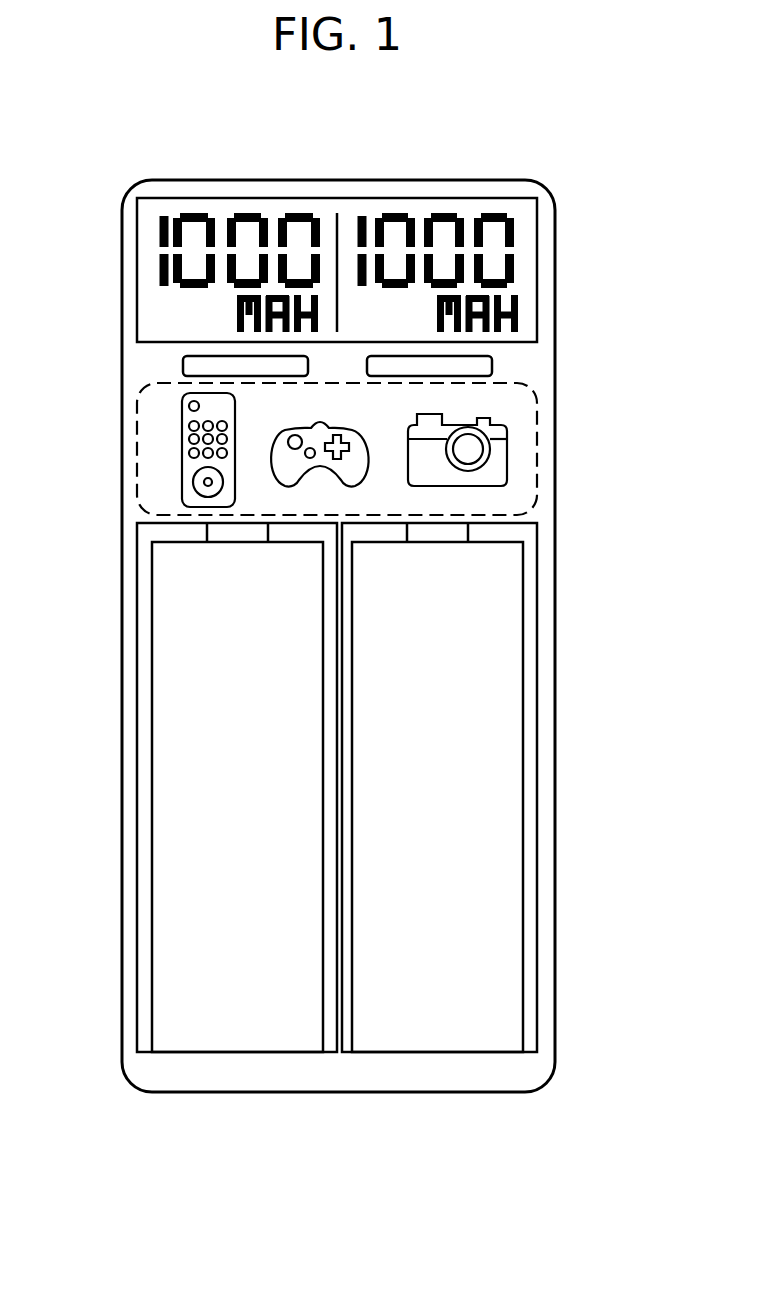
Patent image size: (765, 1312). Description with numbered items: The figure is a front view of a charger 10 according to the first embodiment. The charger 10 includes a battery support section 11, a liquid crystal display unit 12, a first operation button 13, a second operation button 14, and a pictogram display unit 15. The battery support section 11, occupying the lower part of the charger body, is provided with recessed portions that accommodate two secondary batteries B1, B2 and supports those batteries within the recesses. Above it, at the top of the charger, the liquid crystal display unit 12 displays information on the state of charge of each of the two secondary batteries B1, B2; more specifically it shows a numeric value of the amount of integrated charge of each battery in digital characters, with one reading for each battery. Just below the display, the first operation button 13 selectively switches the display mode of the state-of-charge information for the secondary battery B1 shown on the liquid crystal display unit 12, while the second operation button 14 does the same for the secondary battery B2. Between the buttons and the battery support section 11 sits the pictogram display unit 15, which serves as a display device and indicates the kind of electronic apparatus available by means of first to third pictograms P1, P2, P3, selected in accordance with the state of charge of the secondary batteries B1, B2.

The charger 10 is at (241, 165).
The battery support section 11 is at (538, 788).
The liquid crystal display unit 12 is at (527, 249).
The first operation button 13 is at (183, 366).
The second operation button 14 is at (492, 366).
The pictogram display unit 15 is at (137, 478).
The first pictogram P1 is at (180, 430).
The second pictogram P2 is at (343, 425).
The third pictogram P3 is at (508, 460).
The secondary battery B1 is at (180, 713).
The secondary battery B2 is at (493, 713).